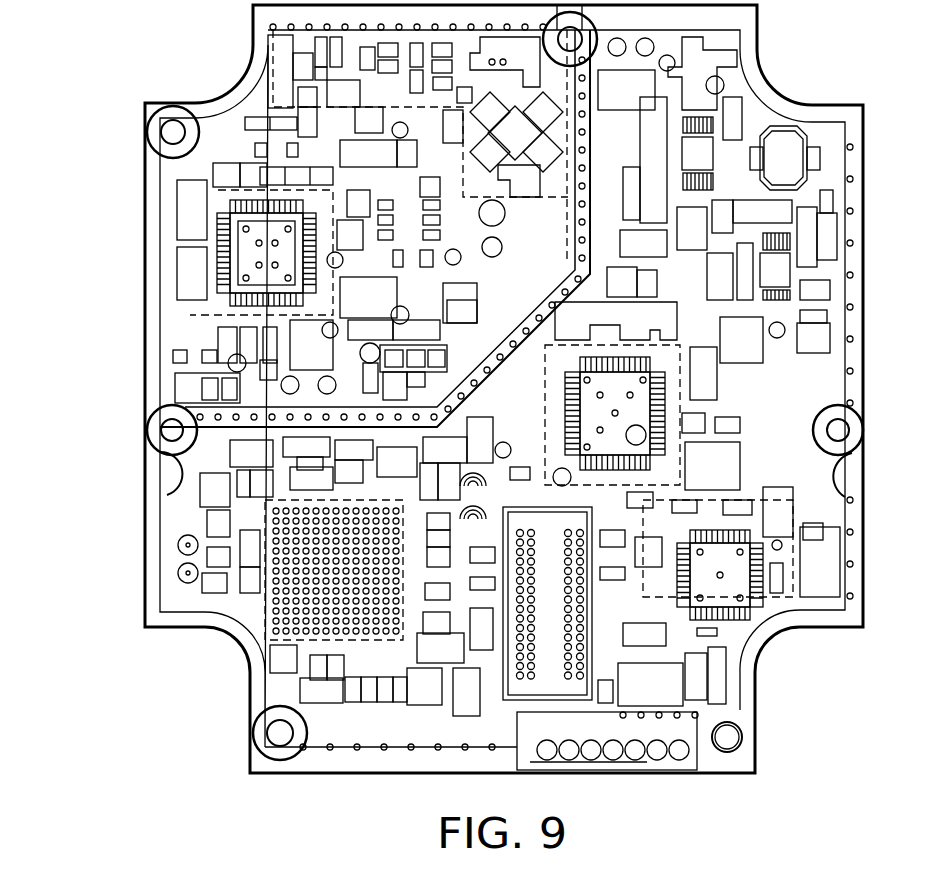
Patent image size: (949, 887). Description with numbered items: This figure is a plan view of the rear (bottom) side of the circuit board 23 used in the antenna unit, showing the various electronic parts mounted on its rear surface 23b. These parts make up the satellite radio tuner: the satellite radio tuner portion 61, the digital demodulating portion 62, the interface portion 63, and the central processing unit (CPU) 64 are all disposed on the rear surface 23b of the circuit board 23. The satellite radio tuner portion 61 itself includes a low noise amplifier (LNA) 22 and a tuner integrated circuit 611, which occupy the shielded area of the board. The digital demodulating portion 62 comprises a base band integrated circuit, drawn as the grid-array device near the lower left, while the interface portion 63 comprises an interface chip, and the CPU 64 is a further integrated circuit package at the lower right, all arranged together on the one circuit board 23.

The low noise amplifier 22 is at (180, 108).
The circuit board 23 is at (863, 133).
The rear surface 23b is at (855, 230).
The satellite radio tuner portion 61 is at (162, 170).
The tuner integrated circuit 611 is at (215, 293).
The digital demodulating portion 62 is at (282, 607).
The interface portion 63 is at (690, 418).
The central processing unit 64 is at (763, 613).